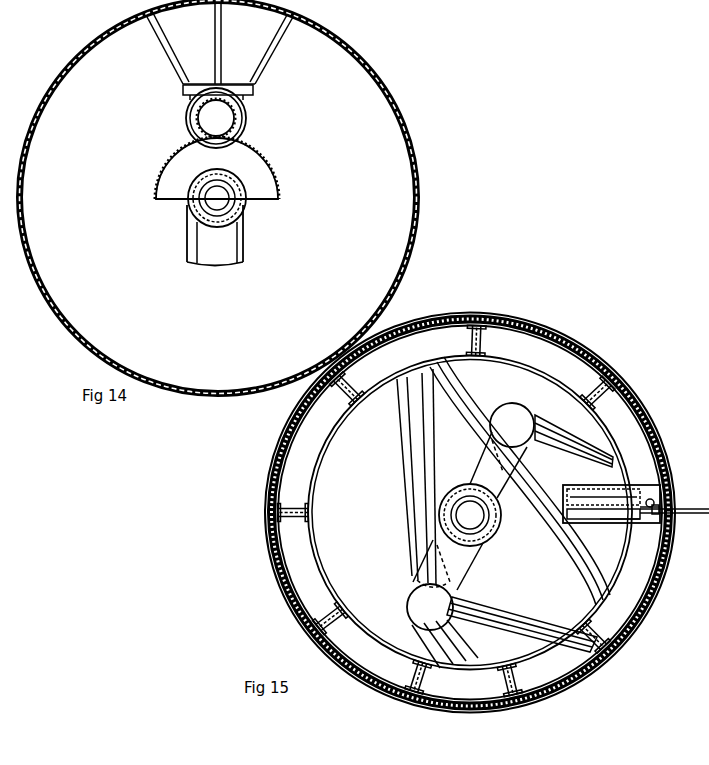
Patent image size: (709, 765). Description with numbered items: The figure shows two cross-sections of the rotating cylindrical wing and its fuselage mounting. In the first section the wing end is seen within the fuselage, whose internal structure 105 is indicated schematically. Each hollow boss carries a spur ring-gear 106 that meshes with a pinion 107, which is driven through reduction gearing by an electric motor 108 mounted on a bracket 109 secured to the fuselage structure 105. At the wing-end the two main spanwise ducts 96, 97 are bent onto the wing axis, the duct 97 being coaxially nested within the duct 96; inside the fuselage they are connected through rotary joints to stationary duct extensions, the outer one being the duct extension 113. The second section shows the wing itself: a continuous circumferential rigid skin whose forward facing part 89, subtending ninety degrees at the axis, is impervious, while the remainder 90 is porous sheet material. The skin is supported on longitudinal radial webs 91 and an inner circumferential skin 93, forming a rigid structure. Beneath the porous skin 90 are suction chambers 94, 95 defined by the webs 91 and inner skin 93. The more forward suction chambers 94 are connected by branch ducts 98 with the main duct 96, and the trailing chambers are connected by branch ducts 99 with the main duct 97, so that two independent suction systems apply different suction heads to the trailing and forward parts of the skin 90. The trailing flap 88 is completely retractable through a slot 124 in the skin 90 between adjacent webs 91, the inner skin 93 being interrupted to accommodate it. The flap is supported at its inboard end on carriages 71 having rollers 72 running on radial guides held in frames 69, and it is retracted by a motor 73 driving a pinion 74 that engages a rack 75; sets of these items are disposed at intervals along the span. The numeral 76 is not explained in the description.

In FIG. 14, the fuselage structure 105 is at (372, 63).
In FIG. 14, the bracket 109 is at (257, 63).
In FIG. 14, the electric motor 108 is at (248, 118).
In FIG. 14, the pinion 107 is at (205, 124).
In FIG. 14, the spur ring-gear 106 is at (170, 168).
In FIG. 14, the main spanwise duct 97 is at (230, 184).
In FIG. 15, the main spanwise duct 97 is at (514, 421).
In FIG. 14, the main spanwise duct 96 is at (252, 185).
In FIG. 15, the main spanwise duct 96 is at (488, 525).
In FIG. 14, the stationary duct extension 113 is at (217, 248).
In FIG. 15, the forward facing part of skin 89 is at (284, 470).
In FIG. 15, the porous skin 90 is at (516, 320).
In FIG. 15, the suction chamber 95 is at (624, 418).
In FIG. 15, the suction chamber 94 is at (490, 314).
In FIG. 15, the inner circumferential skin 93 is at (563, 386).
In FIG. 15, the longitudinal radial web 91 is at (599, 386).
In FIG. 15, the branch duct 98 is at (470, 410).
In FIG. 15, the branch duct 99 is at (560, 435).
In FIG. 15, the motor 73 is at (611, 488).
In FIG. 15, the pinion 74 is at (612, 495).
In FIG. 15, the rack 75 is at (580, 496).
In FIG. 15, the frame 69 is at (590, 489).
In FIG. 15, the guide channel 76 is at (580, 515).
In FIG. 15, the roller 72 is at (612, 520).
In FIG. 15, the carriage 71 is at (647, 519).
In FIG. 15, the trailing flap 88 is at (688, 514).
In FIG. 15, the slot 124 is at (658, 507).